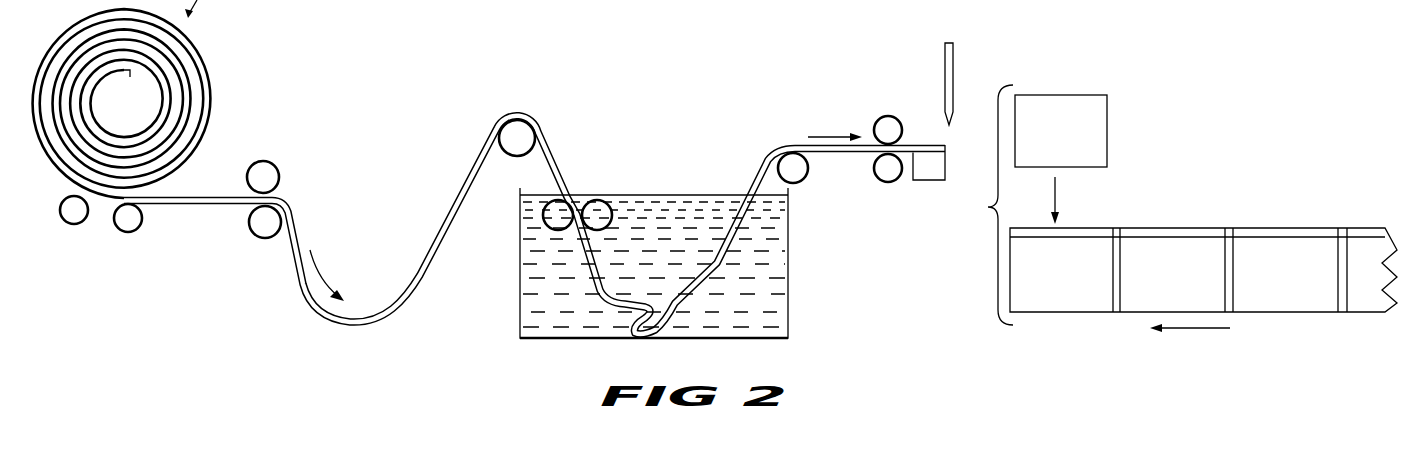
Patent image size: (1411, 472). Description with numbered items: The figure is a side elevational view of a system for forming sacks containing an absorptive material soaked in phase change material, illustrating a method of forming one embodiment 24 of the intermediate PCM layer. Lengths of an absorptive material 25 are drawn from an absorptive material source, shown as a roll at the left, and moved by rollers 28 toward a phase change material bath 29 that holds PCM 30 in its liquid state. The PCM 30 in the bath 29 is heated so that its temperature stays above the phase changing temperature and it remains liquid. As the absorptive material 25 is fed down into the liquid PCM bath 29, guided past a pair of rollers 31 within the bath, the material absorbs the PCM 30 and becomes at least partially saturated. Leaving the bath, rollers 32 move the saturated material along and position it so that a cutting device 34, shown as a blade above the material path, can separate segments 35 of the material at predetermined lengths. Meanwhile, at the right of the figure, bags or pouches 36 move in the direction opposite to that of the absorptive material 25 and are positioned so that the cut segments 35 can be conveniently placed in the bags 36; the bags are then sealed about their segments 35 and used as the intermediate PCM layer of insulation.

The embodiment of the intermediate PCM layer 24 is at (978, 205).
The absorptive material 25 is at (205, 200).
The rollers 28 is at (72, 220).
The phase change material bath 29 is at (500, 253).
The PCM 30 is at (563, 290).
The tank rollers 31 is at (558, 208).
The rollers 32 is at (878, 130).
The cutting device 34 is at (944, 80).
The segments 35 is at (1082, 146).
The bags or pouches 36 is at (1150, 282).